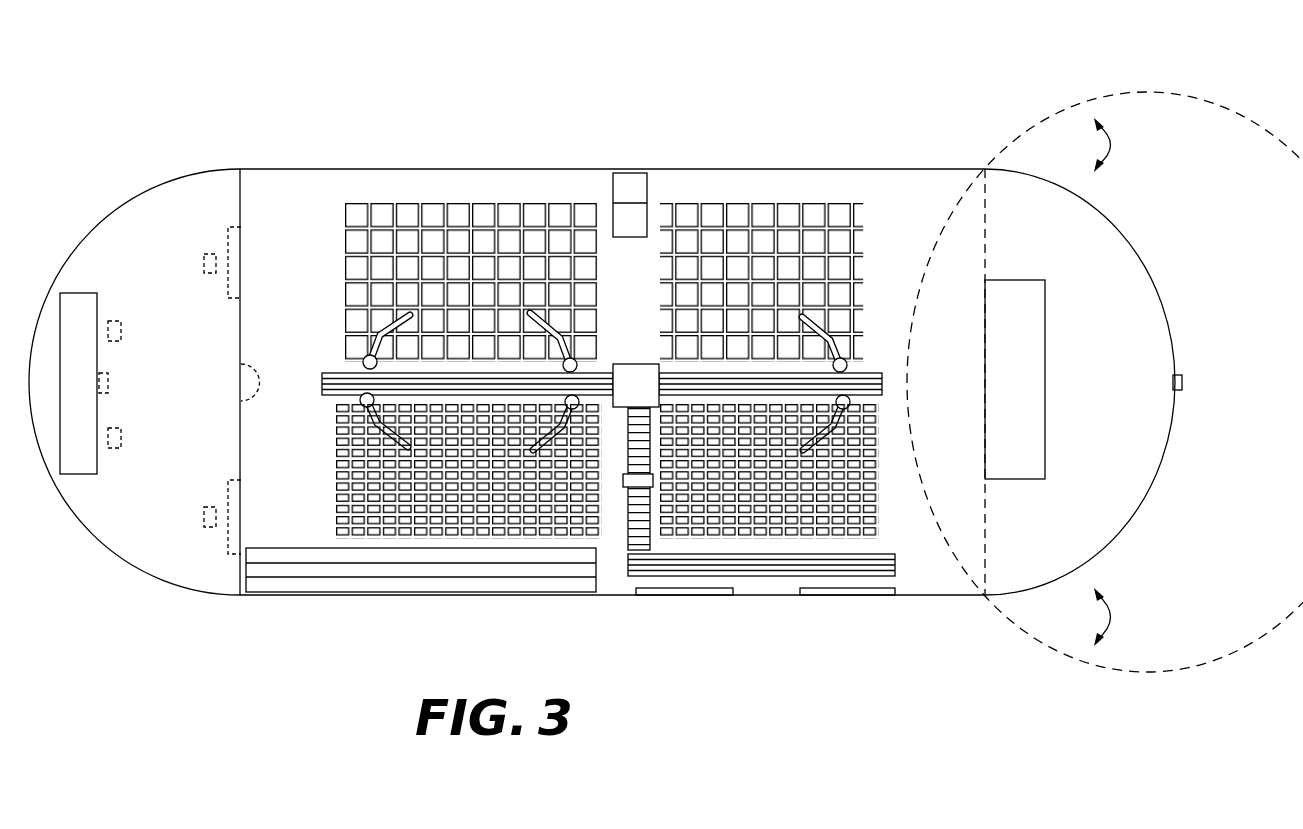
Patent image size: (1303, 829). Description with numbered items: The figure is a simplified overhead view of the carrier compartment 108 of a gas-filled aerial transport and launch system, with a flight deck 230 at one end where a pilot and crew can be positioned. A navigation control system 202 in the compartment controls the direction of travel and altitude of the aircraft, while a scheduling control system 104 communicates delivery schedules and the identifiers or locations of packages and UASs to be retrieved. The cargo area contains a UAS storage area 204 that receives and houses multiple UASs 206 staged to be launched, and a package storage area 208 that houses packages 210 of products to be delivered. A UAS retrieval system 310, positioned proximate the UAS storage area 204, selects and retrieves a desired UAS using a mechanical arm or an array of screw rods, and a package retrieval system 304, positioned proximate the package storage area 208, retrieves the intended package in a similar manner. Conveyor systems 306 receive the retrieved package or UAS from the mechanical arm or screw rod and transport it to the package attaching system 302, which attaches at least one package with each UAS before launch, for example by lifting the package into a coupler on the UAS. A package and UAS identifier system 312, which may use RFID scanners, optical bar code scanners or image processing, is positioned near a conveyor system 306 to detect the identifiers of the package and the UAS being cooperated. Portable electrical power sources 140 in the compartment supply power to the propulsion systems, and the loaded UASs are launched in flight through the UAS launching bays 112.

The scheduling control system 104 is at (623, 182).
The carrier compartment 108 is at (771, 130).
The UAS launching bays 112 is at (695, 593).
The portable electrical power sources 140 is at (258, 584).
The navigation control system 202 is at (80, 302).
The UAS storage area 204 is at (403, 181).
The UASs 206 is at (345, 213).
The package storage area 208 is at (429, 548).
The packages 210 is at (336, 440).
The flight deck 230 is at (168, 192).
The package attaching system 302 is at (622, 377).
The package retrieval system 304 is at (362, 400).
The conveyor systems 306 is at (878, 388).
The UAS retrieval system 310 is at (362, 362).
The package identifier and/or UAS identifier system 312 is at (630, 483).